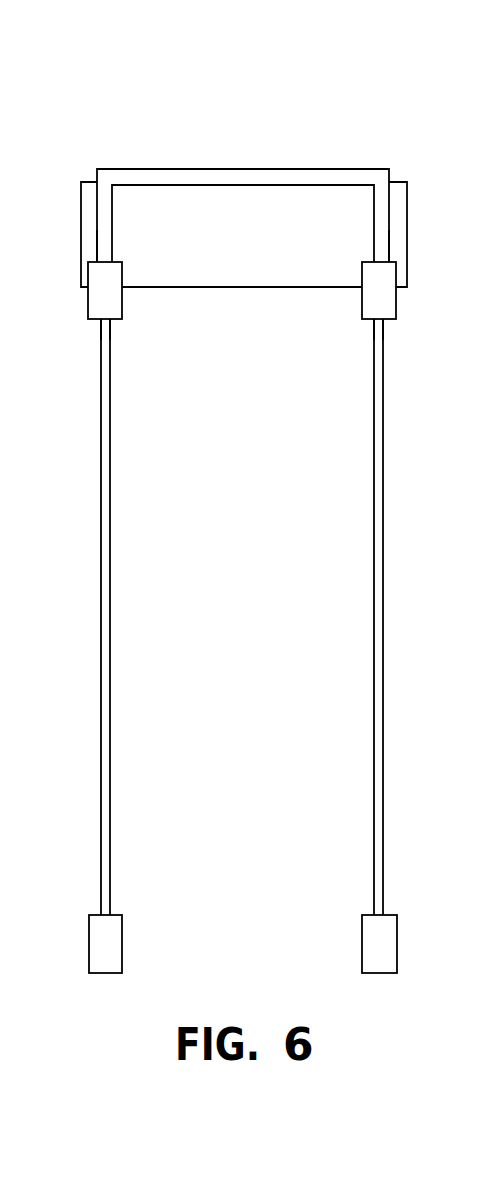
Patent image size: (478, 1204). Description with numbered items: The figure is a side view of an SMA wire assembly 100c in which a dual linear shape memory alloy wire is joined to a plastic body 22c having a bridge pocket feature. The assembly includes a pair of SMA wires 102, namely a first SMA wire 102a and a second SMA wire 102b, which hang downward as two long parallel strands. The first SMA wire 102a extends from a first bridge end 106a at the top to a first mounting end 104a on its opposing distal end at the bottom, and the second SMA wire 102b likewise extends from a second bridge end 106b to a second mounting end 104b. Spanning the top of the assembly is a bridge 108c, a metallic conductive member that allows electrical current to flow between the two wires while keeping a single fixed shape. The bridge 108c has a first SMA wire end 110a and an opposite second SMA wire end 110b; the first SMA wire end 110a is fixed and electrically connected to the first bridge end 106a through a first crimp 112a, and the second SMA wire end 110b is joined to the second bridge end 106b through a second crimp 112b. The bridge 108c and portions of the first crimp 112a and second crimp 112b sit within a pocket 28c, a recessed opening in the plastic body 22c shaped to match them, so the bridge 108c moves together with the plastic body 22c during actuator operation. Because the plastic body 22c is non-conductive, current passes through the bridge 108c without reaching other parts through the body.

The SMA wire assembly 100c is at (122, 80).
The bridge 108c is at (213, 174).
The plastic body 22c is at (282, 220).
The pocket 28c is at (392, 211).
The first SMA wire end 110a is at (104, 261).
The second SMA wire end 110b is at (379, 261).
The first crimp 112a is at (98, 305).
The second crimp 112b is at (382, 298).
The first bridge end 106a is at (108, 321).
The second bridge end 106b is at (376, 321).
The SMA wires 102 is at (242, 617).
The first SMA wire 102a is at (110, 634).
The second SMA wire 102b is at (373, 636).
The first mounting end 104a is at (105, 974).
The second mounting end 104b is at (378, 974).